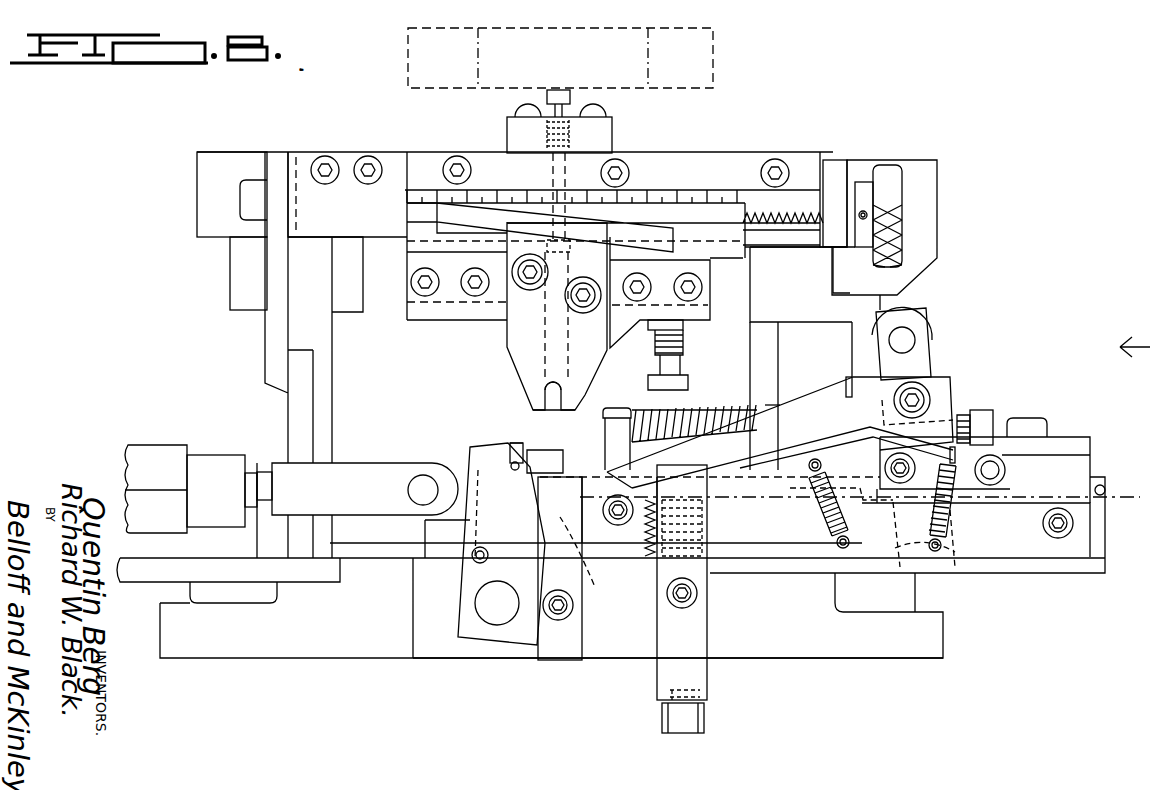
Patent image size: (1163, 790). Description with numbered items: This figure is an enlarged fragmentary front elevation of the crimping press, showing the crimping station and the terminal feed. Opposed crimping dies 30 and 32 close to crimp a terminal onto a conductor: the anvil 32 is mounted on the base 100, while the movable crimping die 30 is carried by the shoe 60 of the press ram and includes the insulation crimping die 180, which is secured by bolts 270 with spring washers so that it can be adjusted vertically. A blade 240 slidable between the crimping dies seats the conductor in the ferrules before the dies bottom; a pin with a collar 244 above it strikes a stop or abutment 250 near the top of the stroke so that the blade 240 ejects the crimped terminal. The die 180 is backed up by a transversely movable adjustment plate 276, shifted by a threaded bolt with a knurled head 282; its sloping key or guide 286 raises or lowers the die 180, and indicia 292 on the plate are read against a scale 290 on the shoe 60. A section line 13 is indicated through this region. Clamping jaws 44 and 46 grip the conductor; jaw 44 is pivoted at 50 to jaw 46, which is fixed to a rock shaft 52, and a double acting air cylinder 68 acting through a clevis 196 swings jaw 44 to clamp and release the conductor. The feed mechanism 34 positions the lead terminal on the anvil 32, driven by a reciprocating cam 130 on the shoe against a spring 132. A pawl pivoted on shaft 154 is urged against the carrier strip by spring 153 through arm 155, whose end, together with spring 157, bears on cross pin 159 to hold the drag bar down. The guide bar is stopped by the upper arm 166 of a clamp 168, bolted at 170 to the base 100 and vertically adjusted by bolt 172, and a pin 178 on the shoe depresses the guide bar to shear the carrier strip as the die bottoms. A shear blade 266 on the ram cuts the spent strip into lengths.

The section line 13 is at (525, 3).
The crimping die 30 is at (512, 377).
The anvil 32 is at (582, 568).
The feed mechanism 34 is at (772, 403).
The clamping jaw 44 is at (488, 444).
The clamping jaw 46 is at (527, 637).
The pivot 50 is at (470, 556).
The rock shaft 52 is at (495, 618).
The shoe 60 is at (222, 153).
The double acting air cylinder 68 is at (150, 445).
The base 100 is at (927, 640).
The reciprocating cam 130 is at (940, 208).
The spring 132 is at (668, 407).
The spring 153 is at (960, 525).
The shaft 154 is at (1010, 476).
The arm 155 is at (920, 443).
The spring 157 is at (838, 522).
The cross pin 159 is at (815, 465).
The upper arm 166 is at (683, 460).
The clamp 168 is at (697, 632).
The bolt 170 is at (695, 592).
The bolt 172 is at (700, 722).
The pin 178 is at (677, 375).
The crimping die 180 is at (527, 338).
The clevis 196 is at (345, 468).
The blade 240 is at (547, 393).
The collar 244 is at (560, 90).
The stop or abutment 250 is at (704, 56).
The shear blade 266 is at (275, 338).
The bolts 270 is at (527, 288).
The adjustment plate 276 is at (705, 222).
The knurled head 282 is at (883, 172).
The sloping key or guide 286 is at (468, 222).
The scale 290 is at (656, 166).
The indicia 292 is at (540, 213).